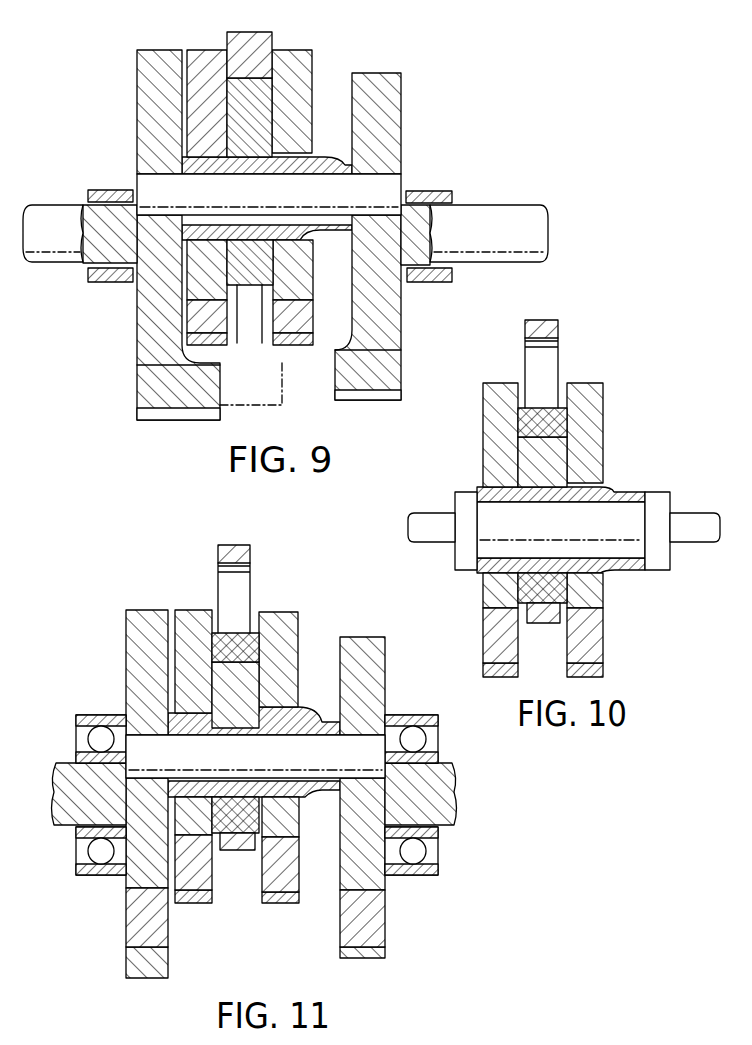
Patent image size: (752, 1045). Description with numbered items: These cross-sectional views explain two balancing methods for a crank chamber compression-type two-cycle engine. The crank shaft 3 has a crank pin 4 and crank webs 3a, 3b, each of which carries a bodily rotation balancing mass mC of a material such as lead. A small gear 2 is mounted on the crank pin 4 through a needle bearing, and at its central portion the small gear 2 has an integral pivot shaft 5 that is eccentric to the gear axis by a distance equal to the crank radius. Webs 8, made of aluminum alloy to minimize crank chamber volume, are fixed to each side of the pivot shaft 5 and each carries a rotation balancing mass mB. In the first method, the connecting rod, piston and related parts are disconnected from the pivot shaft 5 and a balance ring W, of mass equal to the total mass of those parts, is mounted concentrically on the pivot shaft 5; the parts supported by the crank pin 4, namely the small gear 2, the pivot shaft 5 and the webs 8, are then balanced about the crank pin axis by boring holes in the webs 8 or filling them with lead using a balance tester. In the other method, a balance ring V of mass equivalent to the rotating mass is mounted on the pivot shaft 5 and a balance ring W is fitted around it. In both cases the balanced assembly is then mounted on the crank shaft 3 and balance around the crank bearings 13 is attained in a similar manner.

In FIG. 9, the small gear 2 is at (326, 162).
In FIG. 10, the small gear 2 is at (632, 572).
In FIG. 11, the small gear 2 is at (318, 800).
In FIG. 9, the crank shaft 3 is at (495, 235).
In FIG. 9, the crank web 3a is at (150, 103).
In FIG. 11, the crank web 3a is at (123, 794).
In FIG. 9, the crank web 3b is at (383, 128).
In FIG. 11, the crank web 3b is at (378, 686).
In FIG. 9, the crank pin 4 is at (150, 190).
In FIG. 11, the crank pin 4 is at (138, 740).
In FIG. 9, the pivot shaft 5 is at (262, 100).
In FIG. 10, the pivot shaft 5 is at (530, 462).
In FIG. 11, the pivot shaft 5 is at (247, 690).
In FIG. 9, the webs 8 is at (203, 68).
In FIG. 10, the webs 8 is at (495, 422).
In FIG. 11, the webs 8 is at (186, 615).
In FIG. 9, the crank bearings 13 is at (437, 282).
In FIG. 11, the crank bearings 13 is at (78, 758).
In FIG. 9, the balance ring W is at (258, 42).
In FIG. 10, the balance ring W is at (556, 327).
In FIG. 11, the balance ring W is at (250, 558).
In FIG. 9, the balance ring V is at (282, 405).
In FIG. 10, the balance ring V is at (542, 408).
In FIG. 11, the balance ring V is at (232, 633).
In FIG. 10, the rotation balancing mass mB is at (492, 629).
In FIG. 11, the rotation balancing mass mB is at (210, 878).
In FIG. 11, the bodily rotation balancing mass mC is at (138, 922).